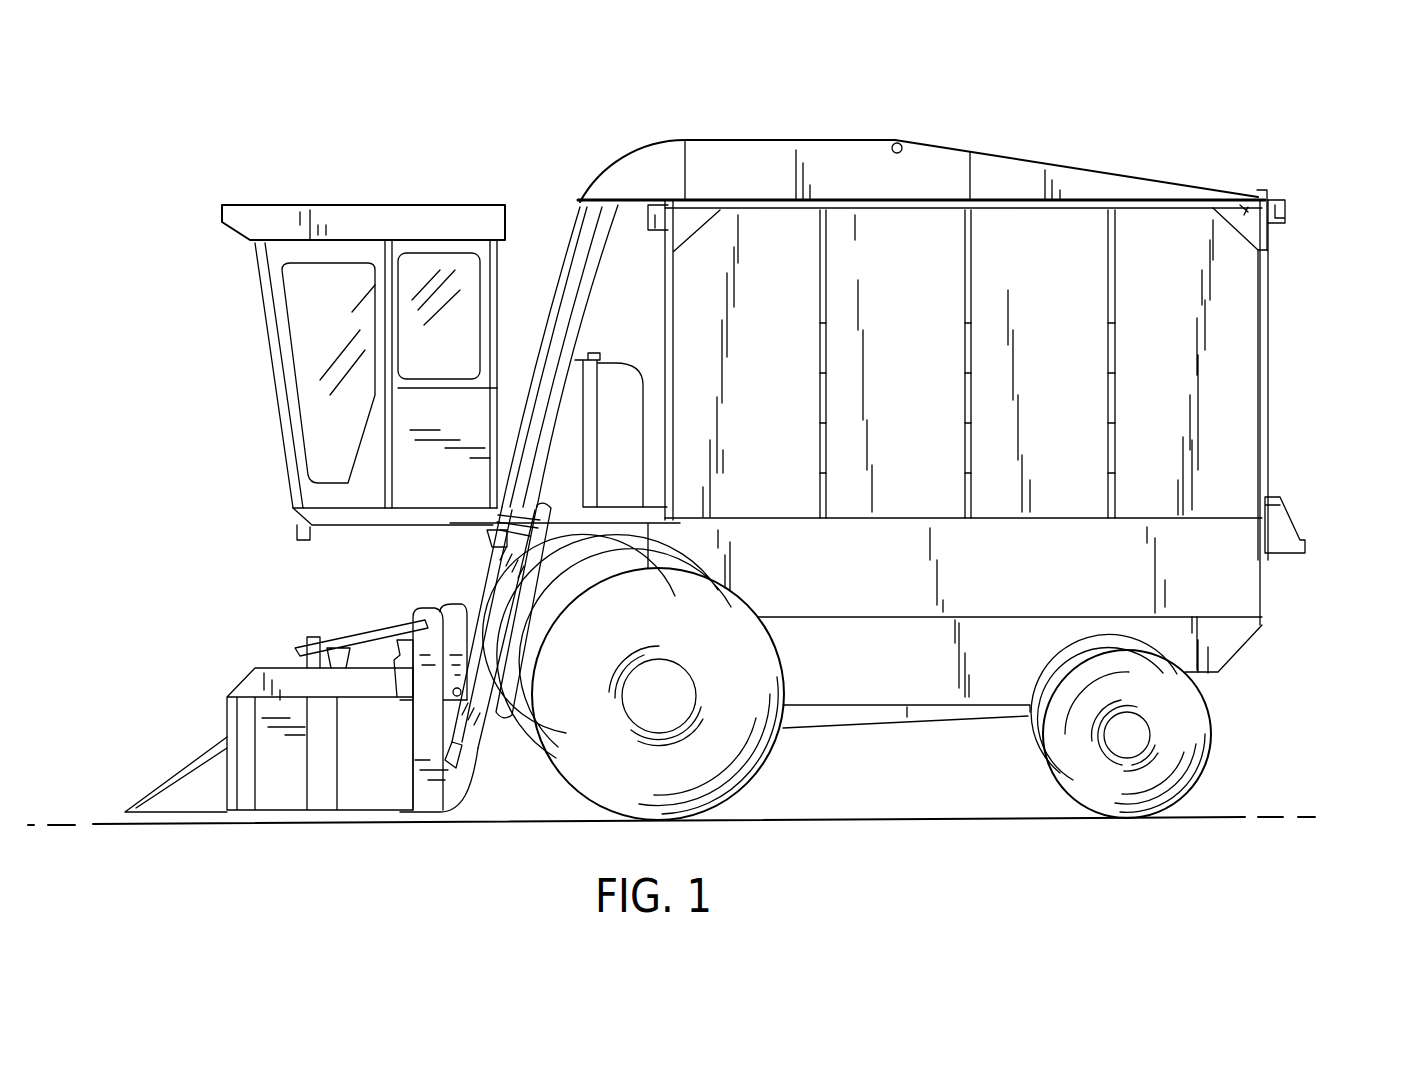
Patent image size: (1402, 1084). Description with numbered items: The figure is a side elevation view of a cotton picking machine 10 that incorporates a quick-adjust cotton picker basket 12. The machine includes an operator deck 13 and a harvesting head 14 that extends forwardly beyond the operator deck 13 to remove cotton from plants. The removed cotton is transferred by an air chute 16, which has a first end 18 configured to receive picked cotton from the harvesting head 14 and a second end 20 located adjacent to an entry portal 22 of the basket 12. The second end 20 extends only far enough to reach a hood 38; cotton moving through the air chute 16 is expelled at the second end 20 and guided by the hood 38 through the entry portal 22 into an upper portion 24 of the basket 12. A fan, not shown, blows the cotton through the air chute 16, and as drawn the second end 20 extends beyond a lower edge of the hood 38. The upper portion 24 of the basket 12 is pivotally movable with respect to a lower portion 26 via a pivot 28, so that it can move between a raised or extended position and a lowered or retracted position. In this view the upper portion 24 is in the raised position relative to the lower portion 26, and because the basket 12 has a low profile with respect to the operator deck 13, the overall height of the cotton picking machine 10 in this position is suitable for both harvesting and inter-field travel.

The cotton picking machine 10 is at (773, 134).
The cotton picker basket 12 is at (933, 464).
The operator deck 13 is at (388, 218).
The harvesting head 14 is at (247, 656).
The air chute 16 is at (575, 254).
The first end 18 is at (432, 750).
The second end 20 is at (628, 252).
The entry portal 22 is at (697, 175).
The upper portion 24 is at (1288, 162).
The lower portion 26 is at (1302, 493).
The pivot 28 is at (1288, 200).
The hood 38 is at (650, 194).